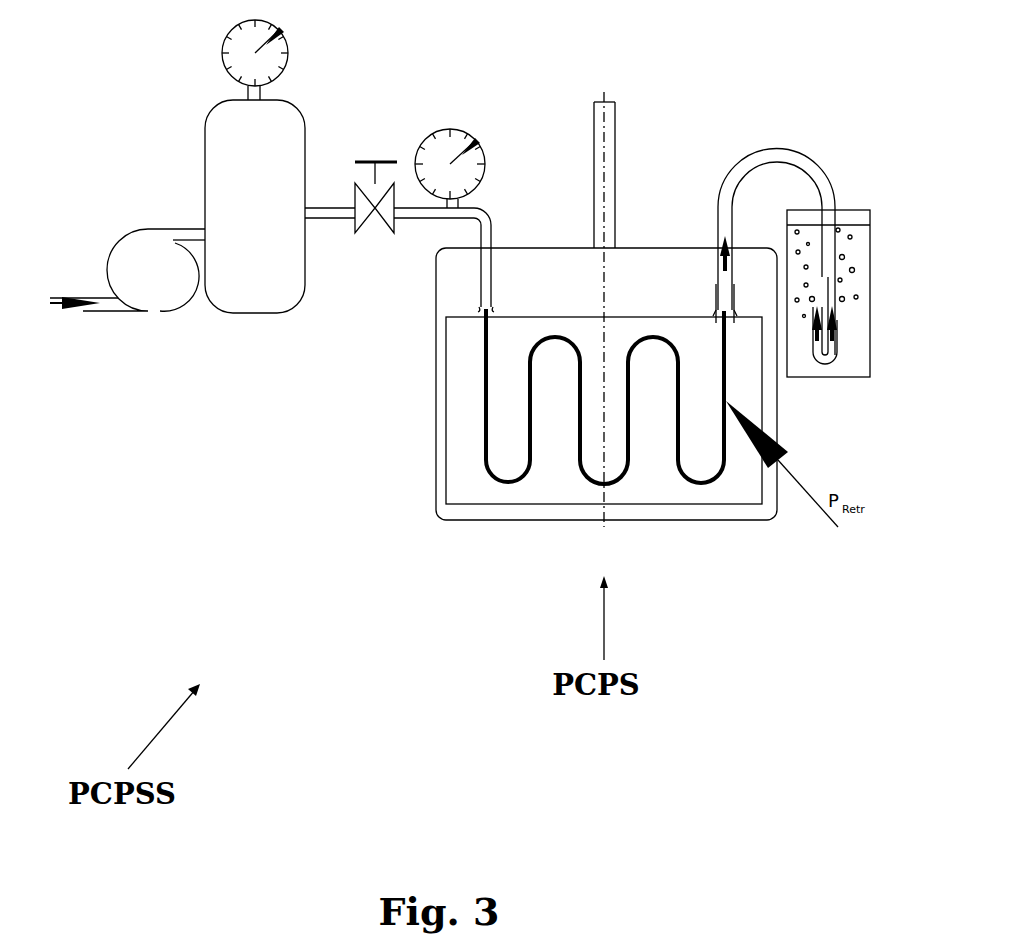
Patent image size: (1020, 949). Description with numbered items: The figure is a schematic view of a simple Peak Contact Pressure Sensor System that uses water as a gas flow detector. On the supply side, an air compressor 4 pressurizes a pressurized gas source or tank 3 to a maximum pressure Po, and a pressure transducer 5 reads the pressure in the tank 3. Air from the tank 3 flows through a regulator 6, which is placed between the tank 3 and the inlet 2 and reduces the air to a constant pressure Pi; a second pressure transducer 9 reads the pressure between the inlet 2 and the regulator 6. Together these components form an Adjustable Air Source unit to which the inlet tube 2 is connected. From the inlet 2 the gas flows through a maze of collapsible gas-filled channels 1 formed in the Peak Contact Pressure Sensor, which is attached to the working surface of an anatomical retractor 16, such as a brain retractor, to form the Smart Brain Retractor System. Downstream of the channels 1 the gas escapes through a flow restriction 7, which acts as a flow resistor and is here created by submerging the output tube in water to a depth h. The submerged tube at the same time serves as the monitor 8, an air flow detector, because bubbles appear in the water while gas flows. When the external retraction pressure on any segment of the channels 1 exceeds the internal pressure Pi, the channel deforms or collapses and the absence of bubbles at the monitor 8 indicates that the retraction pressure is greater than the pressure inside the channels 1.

The gas-filled channels 1 is at (605, 403).
The inlet 2 is at (488, 285).
The pressurized gas source 3 is at (255, 206).
The compressor 4 is at (127, 270).
The pressure transducer 5 is at (222, 43).
The regulator 6 is at (361, 227).
The flow restriction 7 is at (717, 297).
The monitor 8 is at (838, 368).
The pressure transducer 9 is at (468, 133).
The anatomical retractor 16 is at (651, 257).